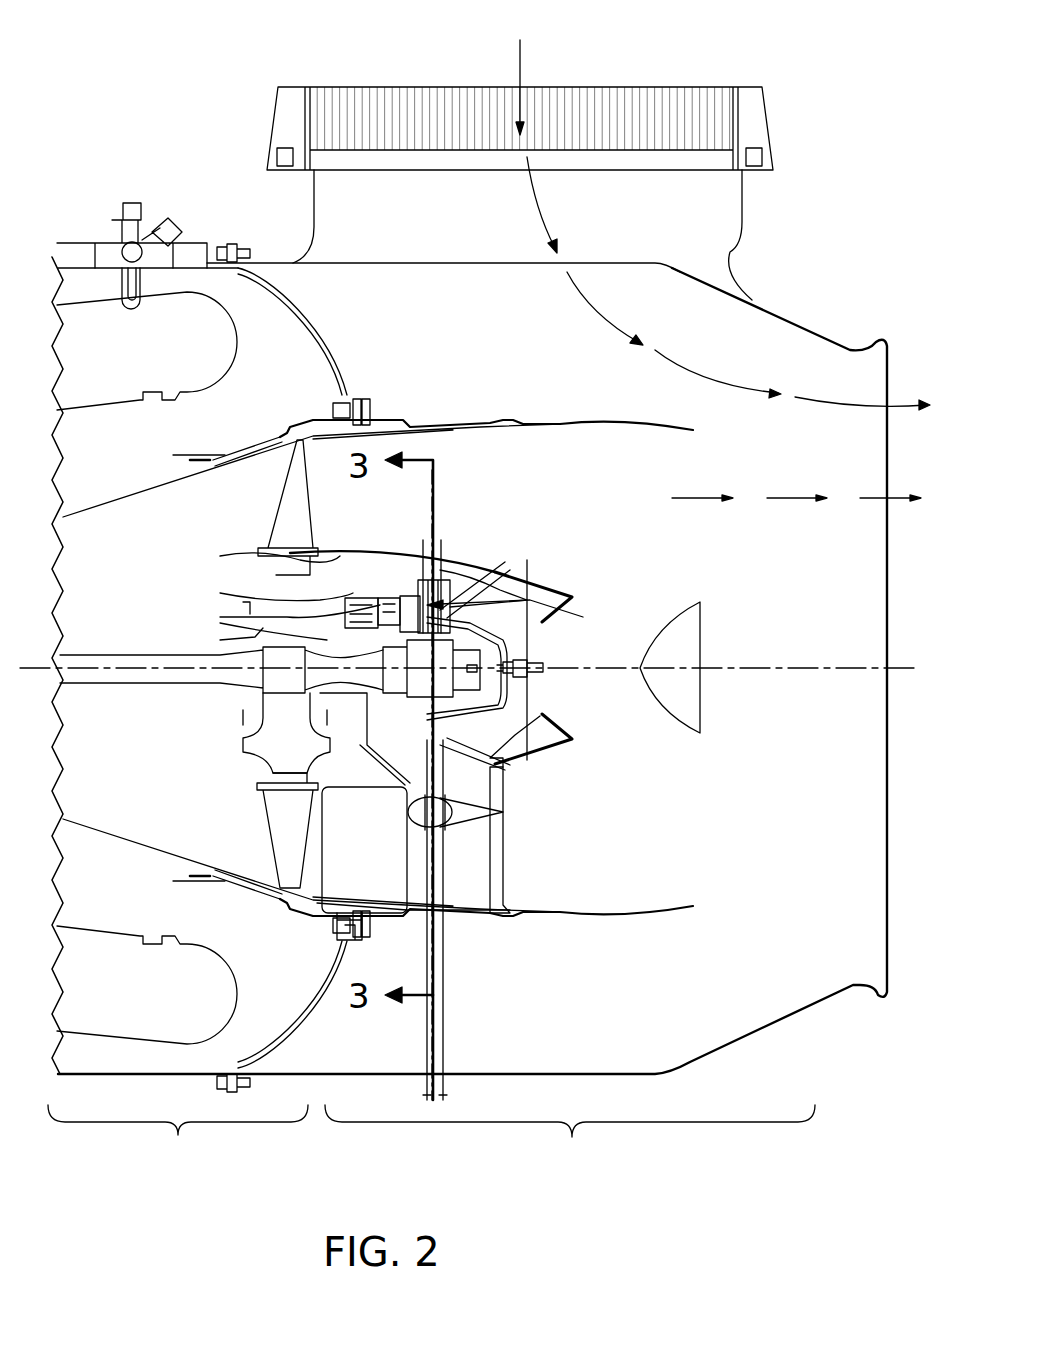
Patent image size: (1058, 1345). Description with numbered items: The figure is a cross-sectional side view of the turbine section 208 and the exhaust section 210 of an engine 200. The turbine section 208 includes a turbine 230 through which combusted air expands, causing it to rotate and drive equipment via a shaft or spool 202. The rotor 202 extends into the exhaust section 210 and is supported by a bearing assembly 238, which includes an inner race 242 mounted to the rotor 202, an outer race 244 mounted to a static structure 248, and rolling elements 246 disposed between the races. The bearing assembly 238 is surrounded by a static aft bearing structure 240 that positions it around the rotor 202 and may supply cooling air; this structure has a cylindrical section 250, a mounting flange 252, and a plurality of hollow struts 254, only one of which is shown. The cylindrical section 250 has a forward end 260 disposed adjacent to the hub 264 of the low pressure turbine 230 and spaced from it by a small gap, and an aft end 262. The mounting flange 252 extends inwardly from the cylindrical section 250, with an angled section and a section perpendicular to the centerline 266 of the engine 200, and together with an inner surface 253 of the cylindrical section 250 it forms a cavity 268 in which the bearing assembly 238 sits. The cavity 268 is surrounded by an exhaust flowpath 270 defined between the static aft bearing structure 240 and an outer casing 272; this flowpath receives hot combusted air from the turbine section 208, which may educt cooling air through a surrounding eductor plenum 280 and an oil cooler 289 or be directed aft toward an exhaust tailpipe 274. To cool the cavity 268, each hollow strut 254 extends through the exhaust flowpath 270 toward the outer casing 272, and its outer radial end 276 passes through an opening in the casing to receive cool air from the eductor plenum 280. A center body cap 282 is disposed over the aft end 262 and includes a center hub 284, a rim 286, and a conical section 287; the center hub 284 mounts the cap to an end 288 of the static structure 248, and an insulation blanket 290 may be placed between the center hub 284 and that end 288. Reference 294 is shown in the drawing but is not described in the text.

The engine 200 is at (130, 116).
The shaft or spool 202 is at (173, 682).
The turbine section 208 is at (178, 1138).
The exhaust section 210 is at (570, 1138).
The turbine 230 is at (275, 518).
The bearing assembly 238 is at (533, 613).
The static aft bearing structure 240 is at (472, 577).
The inner race 242 is at (330, 646).
The outer race 244 is at (330, 592).
The rolling elements 246 is at (330, 620).
The static structure 248 is at (378, 600).
The cylindrical section 250 is at (388, 598).
The mounting flange 252 is at (330, 573).
The inner surface 253 is at (490, 592).
The hollow struts 254 is at (502, 880).
The forward end 260 is at (325, 790).
The aft end 262 is at (530, 748).
The hub 264 is at (265, 792).
The centerline 266 is at (770, 667).
The cavity 268 is at (468, 553).
The exhaust flowpath 270 is at (647, 508).
The outer casing 272 is at (440, 426).
The exhaust tailpipe 274 is at (525, 428).
The outer radial end 276 is at (505, 914).
The eductor plenum 280 is at (498, 329).
The center body cap 282 is at (570, 745).
The center hub 284 is at (570, 740).
The rim 286 is at (518, 750).
The conical section 287 is at (578, 592).
The end 288 is at (507, 688).
The oil cooler 289 is at (385, 150).
The insulation blanket 290 is at (503, 640).
The bearing 294 is at (408, 598).